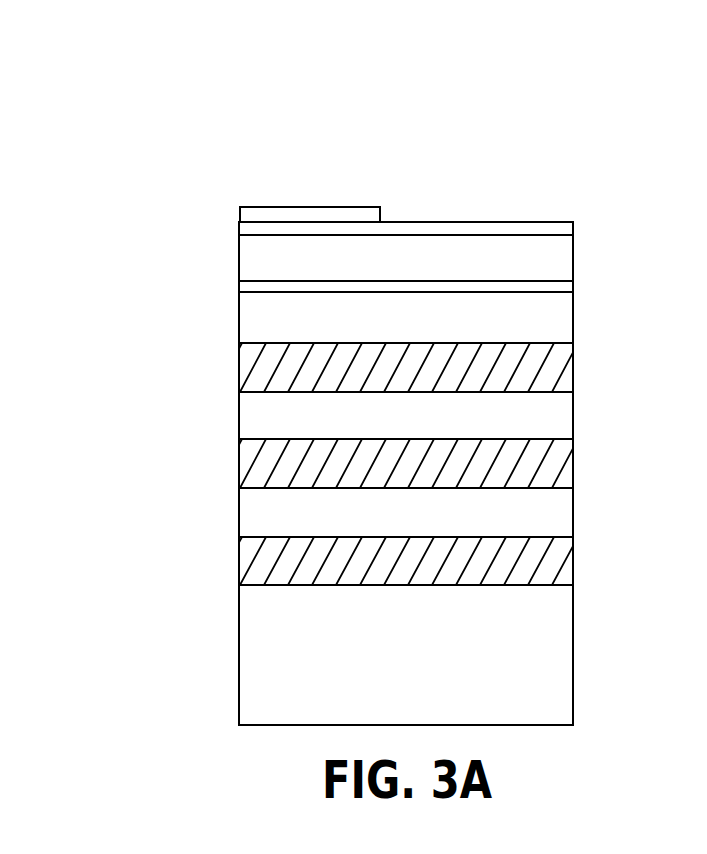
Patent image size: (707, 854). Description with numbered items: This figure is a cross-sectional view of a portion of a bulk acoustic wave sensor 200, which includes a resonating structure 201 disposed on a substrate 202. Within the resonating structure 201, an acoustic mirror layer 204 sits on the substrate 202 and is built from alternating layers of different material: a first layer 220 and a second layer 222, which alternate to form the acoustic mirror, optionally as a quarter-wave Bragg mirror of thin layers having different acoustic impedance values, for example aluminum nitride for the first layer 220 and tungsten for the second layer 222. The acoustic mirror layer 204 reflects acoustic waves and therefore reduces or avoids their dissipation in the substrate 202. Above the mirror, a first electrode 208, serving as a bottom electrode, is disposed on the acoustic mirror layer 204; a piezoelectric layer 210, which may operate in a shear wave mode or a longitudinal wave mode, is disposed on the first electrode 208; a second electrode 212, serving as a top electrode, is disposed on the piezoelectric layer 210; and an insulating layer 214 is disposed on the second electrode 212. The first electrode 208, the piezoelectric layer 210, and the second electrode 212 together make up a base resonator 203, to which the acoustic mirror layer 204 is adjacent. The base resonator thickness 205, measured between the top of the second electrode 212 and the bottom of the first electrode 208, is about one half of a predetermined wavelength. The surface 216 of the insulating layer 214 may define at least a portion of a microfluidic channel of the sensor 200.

The bulk acoustic wave sensor 200 is at (325, 115).
The resonating structure 201 is at (668, 270).
The substrate 202 is at (583, 585).
The base resonator 203 is at (583, 221).
The acoustic mirror layer 204 is at (583, 295).
The base resonator thickness 205 is at (485, 203).
The first electrode 208 is at (239, 285).
The piezoelectric layer 210 is at (239, 276).
The second electrode 212 is at (240, 228).
The insulating layer 214 is at (335, 207).
The surface 216 is at (365, 188).
The first layer 220 is at (239, 383).
The second layer 222 is at (239, 335).